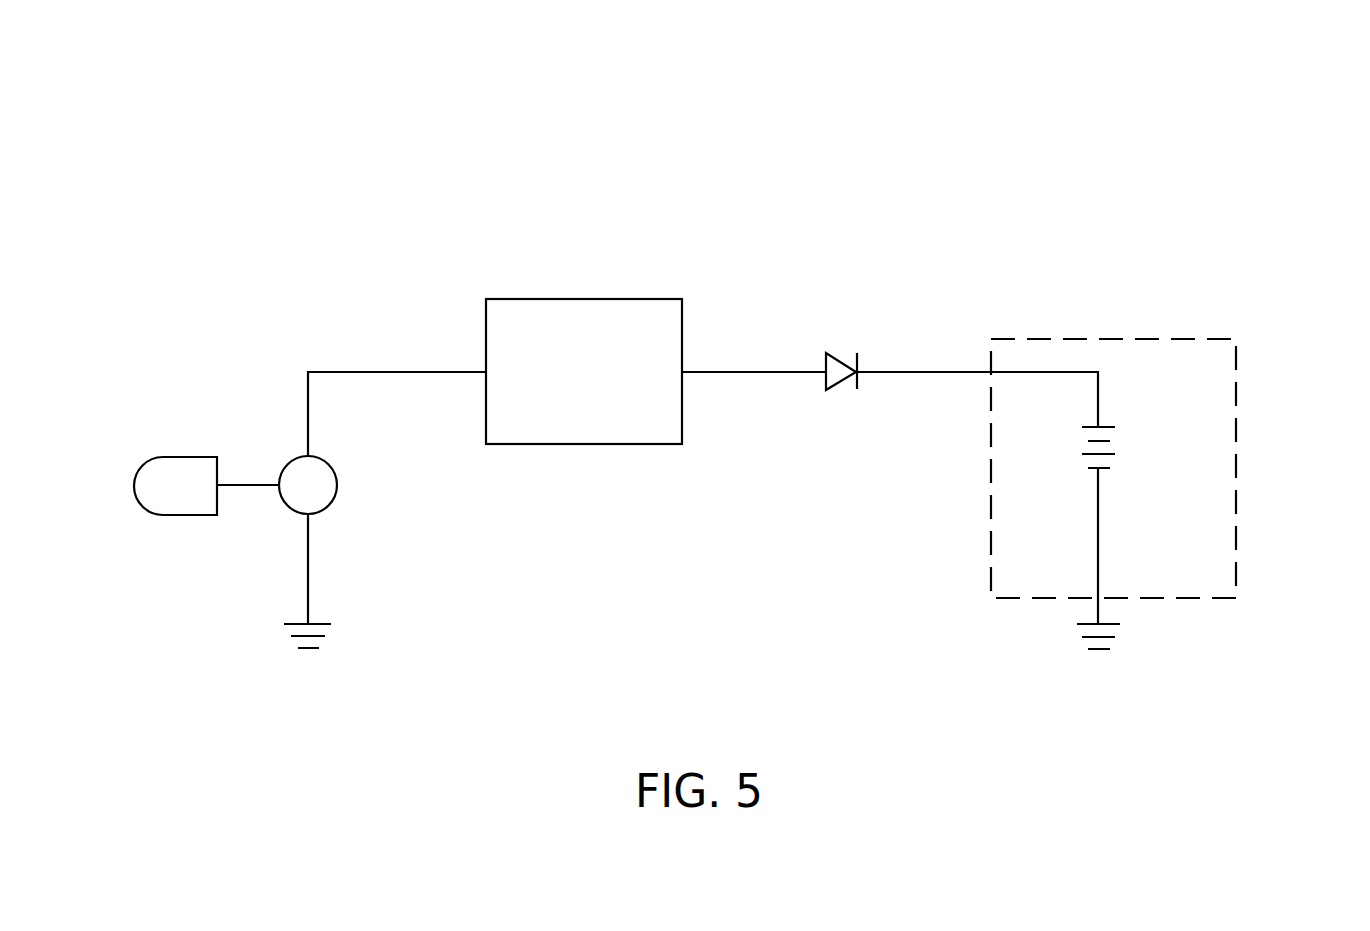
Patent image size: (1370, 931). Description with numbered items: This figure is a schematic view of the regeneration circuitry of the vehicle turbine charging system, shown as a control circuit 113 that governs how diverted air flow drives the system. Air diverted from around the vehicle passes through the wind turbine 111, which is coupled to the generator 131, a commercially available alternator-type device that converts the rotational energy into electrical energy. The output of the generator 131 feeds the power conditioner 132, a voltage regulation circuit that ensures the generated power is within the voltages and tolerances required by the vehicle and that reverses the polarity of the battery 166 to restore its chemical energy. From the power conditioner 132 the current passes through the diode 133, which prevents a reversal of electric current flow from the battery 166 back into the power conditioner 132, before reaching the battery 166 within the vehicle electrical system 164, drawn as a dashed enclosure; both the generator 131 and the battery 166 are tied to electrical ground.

The control circuit 113 is at (324, 62).
The wind turbine 111 is at (187, 457).
The generator 131 is at (390, 532).
The power conditioner 132 is at (528, 299).
The diode 133 is at (833, 349).
The electrical system 164 is at (1185, 338).
The battery 166 is at (1118, 450).